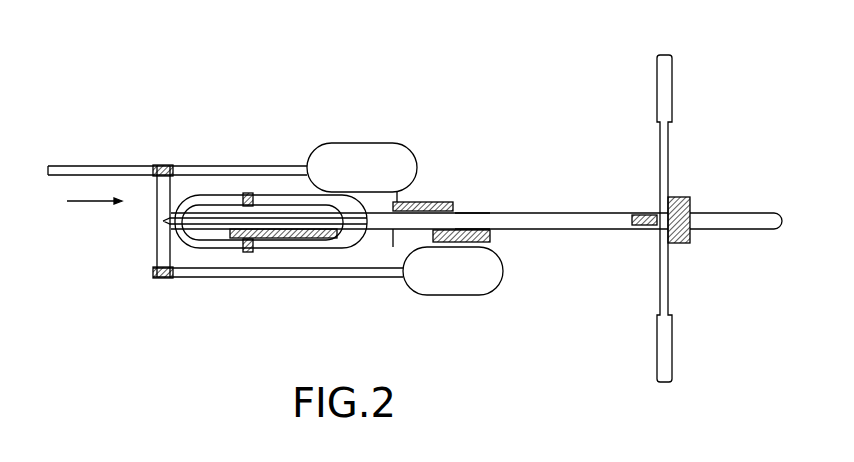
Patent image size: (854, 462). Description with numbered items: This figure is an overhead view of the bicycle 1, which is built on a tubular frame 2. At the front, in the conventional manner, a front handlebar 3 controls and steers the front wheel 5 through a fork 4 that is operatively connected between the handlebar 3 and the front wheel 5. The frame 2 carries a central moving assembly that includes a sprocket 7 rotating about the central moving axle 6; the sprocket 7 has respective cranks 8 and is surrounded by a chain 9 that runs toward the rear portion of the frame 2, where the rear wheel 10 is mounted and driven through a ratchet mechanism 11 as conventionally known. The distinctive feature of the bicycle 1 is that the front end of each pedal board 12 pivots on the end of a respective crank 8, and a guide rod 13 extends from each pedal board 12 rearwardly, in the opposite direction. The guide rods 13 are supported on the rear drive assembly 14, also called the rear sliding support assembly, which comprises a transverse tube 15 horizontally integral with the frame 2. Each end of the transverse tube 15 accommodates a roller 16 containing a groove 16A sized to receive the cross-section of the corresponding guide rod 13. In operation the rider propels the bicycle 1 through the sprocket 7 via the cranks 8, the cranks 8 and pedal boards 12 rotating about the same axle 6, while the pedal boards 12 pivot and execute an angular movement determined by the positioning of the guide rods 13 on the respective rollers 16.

The bicycle 1 is at (455, 85).
The tubular frame 2 is at (537, 215).
The front handlebar 3 is at (670, 138).
The fork 4 is at (680, 197).
The front wheel 5 is at (728, 220).
The central moving axle 6 is at (451, 209).
The sprocket 7 is at (470, 215).
The cranks 8 is at (488, 242).
The chain 9 is at (427, 202).
The rear wheel 10 is at (160, 223).
The ratchet mechanism 11 is at (232, 250).
The pedal boards 12 is at (364, 163).
The guide rod 13 is at (244, 165).
The rear drive assembly 14 is at (83, 201).
The transverse tube 15 is at (165, 250).
The roller 16 is at (163, 166).
The groove 16A is at (153, 164).